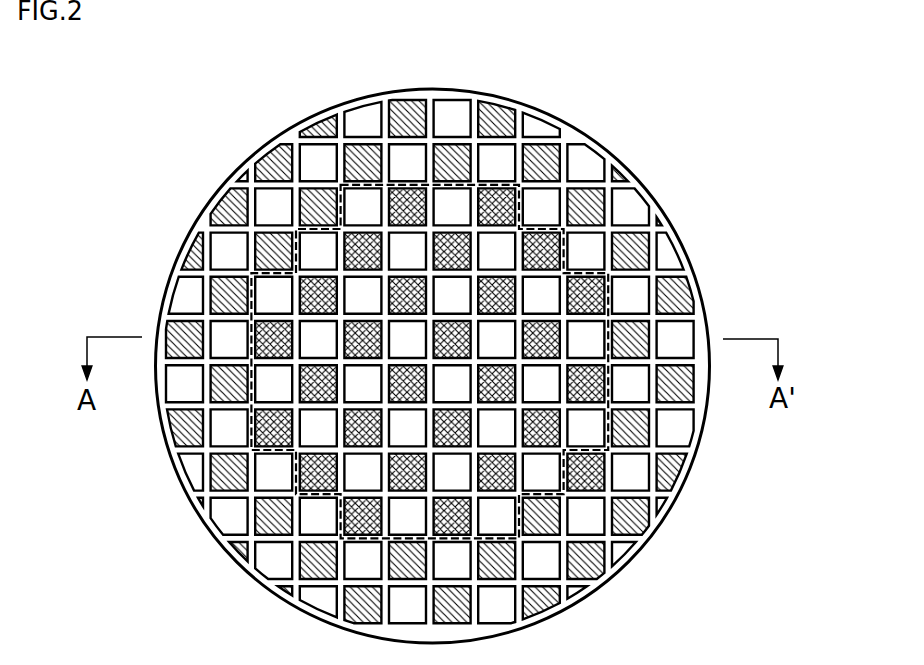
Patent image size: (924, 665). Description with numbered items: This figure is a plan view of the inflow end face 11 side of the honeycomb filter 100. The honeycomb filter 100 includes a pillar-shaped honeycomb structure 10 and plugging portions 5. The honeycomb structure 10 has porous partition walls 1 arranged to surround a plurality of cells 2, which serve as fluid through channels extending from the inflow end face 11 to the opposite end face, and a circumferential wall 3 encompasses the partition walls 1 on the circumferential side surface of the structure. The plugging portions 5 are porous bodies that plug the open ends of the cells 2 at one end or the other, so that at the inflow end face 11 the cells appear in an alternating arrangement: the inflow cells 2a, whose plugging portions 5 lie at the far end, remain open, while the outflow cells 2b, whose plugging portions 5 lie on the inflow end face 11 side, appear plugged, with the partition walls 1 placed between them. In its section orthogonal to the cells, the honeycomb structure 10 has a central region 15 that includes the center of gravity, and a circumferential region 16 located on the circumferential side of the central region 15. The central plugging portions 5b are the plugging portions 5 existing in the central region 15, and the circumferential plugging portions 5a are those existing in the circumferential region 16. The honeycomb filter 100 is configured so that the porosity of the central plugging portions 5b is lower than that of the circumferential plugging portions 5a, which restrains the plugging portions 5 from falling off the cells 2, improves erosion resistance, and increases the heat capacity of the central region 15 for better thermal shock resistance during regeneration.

The honeycomb filter 100 is at (772, 60).
The partition walls 1 is at (545, 189).
The cells 2 is at (677, 227).
The inflow cells 2a is at (583, 252).
The outflow cells 2b is at (592, 293).
The circumferential wall 3 is at (648, 527).
The plugging portions 5 is at (450, 178).
The circumferential plugging portions 5a is at (446, 170).
The central plugging portions 5b is at (387, 275).
The honeycomb structure 10 is at (734, 317).
The inflow end face 11 is at (233, 138).
The central region 15 is at (307, 432).
The circumferential region 16 is at (278, 559).